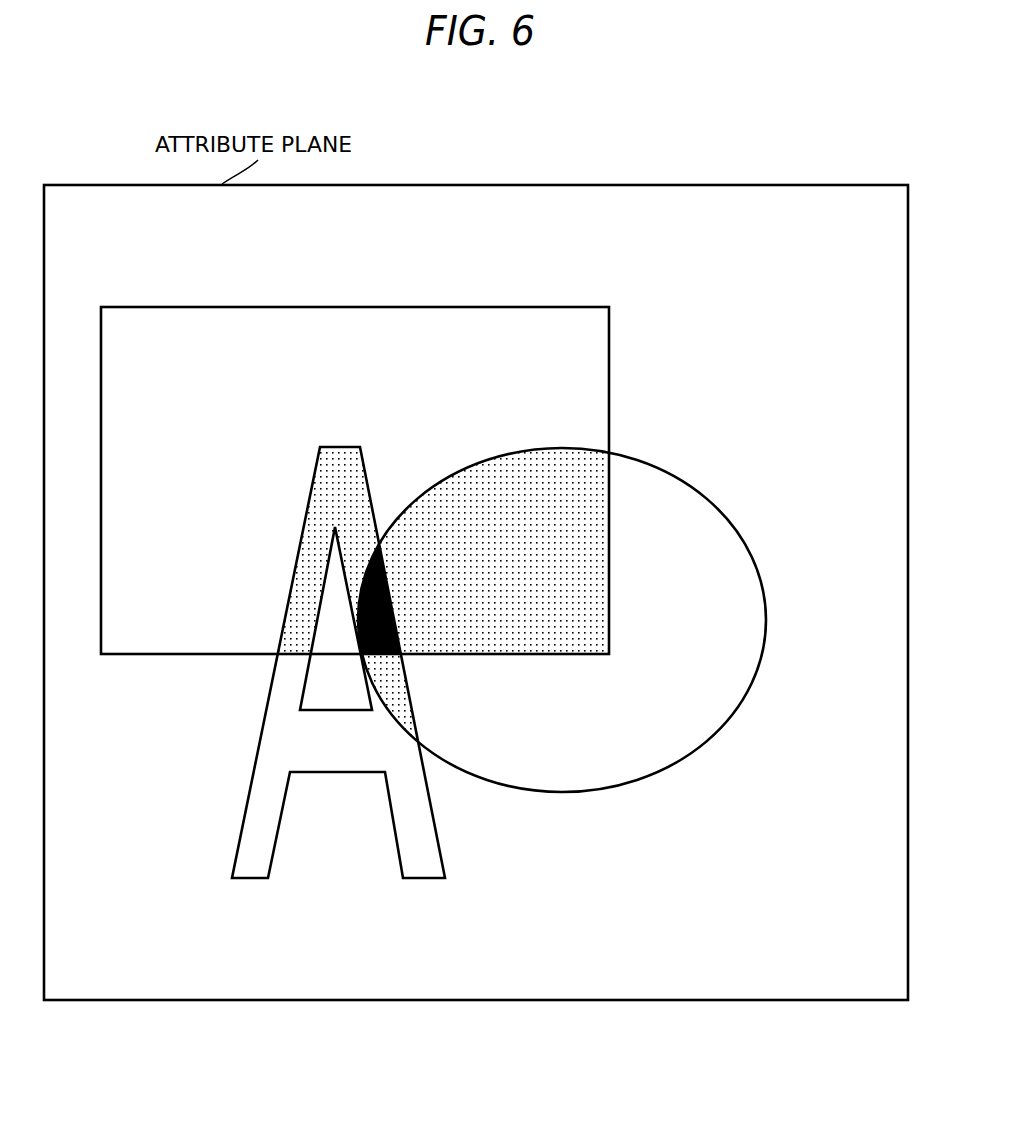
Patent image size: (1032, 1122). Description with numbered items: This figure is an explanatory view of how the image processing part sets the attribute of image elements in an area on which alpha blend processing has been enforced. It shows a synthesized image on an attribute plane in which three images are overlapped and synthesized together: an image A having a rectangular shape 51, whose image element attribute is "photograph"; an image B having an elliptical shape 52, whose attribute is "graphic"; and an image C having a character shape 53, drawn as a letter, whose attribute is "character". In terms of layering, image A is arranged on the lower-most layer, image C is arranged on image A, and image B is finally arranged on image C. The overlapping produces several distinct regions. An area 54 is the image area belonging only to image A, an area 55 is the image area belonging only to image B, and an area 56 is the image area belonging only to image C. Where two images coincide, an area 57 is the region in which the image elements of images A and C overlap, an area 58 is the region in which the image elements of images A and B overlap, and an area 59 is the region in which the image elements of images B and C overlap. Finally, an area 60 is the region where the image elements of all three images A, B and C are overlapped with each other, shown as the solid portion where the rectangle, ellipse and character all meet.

The rectangular shape 51 is at (483, 243).
The elliptical shape 52 is at (712, 408).
The character shape 53 is at (467, 835).
The area only for the image A 54 is at (268, 306).
The area only for the image B 55 is at (757, 562).
The area only for the image C 56 is at (248, 796).
The overlap area of images A and C 57 is at (367, 478).
The overlap area of images A and B 58 is at (528, 447).
The overlap area of images B and C 59 is at (390, 715).
The overlap area of images A, B and C 60 is at (365, 570).